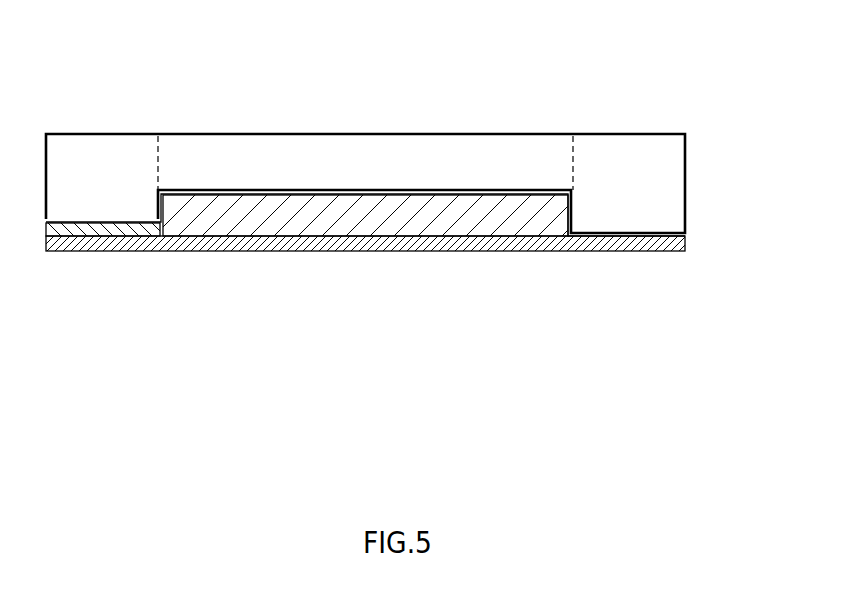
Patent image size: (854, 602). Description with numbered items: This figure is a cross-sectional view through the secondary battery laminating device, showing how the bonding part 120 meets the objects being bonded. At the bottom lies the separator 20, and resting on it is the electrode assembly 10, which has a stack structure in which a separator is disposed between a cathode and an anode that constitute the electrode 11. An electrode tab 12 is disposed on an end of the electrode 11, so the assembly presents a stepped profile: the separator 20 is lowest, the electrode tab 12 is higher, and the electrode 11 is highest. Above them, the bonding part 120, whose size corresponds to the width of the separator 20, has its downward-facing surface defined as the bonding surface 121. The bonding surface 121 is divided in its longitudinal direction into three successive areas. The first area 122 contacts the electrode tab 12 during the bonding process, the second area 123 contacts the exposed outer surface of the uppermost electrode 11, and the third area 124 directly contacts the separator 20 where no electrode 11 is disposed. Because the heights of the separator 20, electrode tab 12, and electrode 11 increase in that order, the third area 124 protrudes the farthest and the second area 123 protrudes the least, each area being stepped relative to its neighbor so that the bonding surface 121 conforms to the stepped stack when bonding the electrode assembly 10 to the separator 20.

The electrode assembly 10 is at (346, 279).
The electrode 11 is at (352, 228).
The electrode tab 12 is at (113, 273).
The separator 20 is at (673, 242).
The bonding part 120 is at (673, 182).
The bonding surface 121 is at (365, 126).
The first area 122 is at (124, 219).
The second area 123 is at (366, 192).
The third area 124 is at (626, 153).